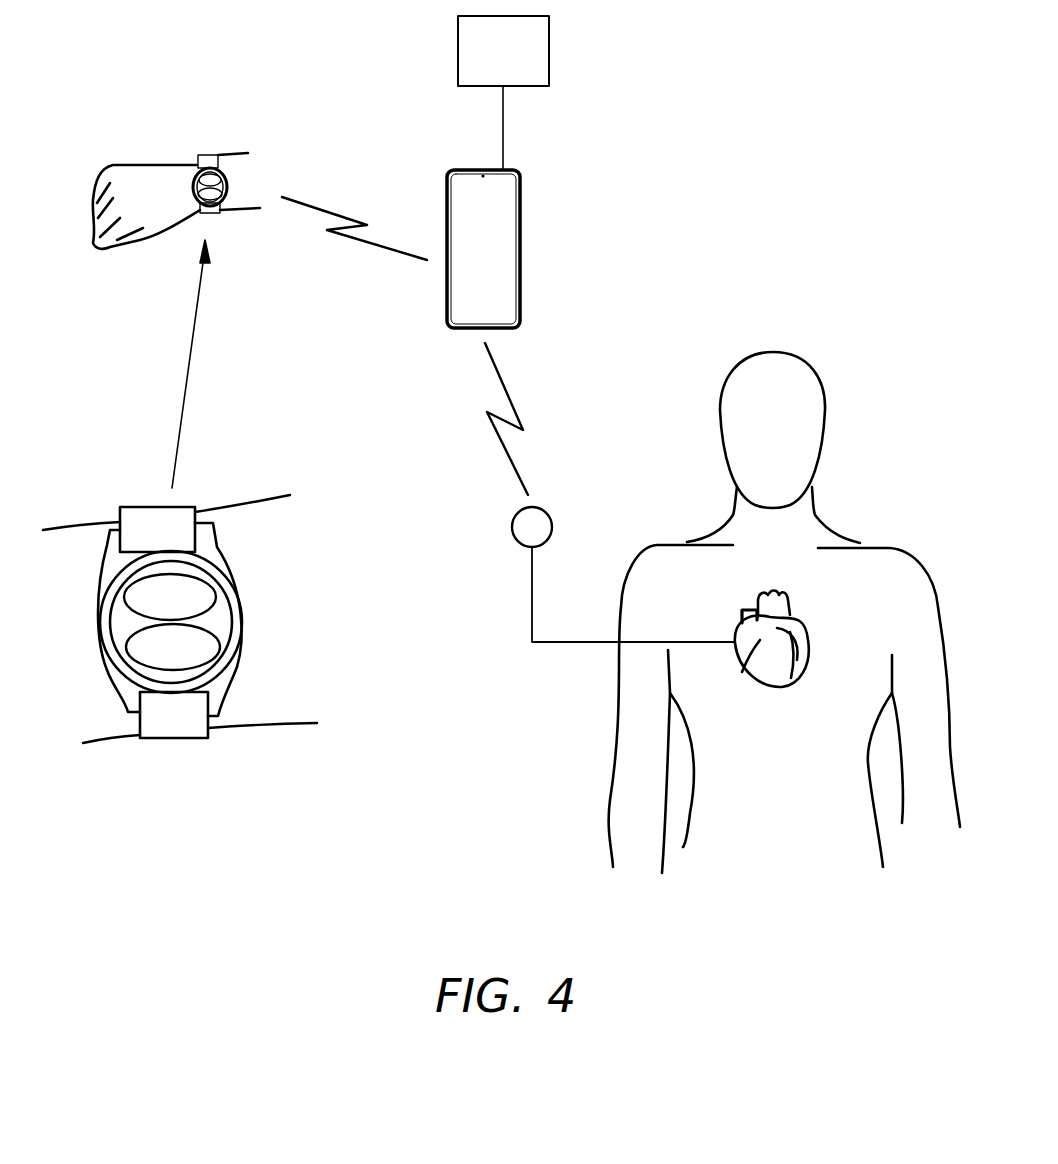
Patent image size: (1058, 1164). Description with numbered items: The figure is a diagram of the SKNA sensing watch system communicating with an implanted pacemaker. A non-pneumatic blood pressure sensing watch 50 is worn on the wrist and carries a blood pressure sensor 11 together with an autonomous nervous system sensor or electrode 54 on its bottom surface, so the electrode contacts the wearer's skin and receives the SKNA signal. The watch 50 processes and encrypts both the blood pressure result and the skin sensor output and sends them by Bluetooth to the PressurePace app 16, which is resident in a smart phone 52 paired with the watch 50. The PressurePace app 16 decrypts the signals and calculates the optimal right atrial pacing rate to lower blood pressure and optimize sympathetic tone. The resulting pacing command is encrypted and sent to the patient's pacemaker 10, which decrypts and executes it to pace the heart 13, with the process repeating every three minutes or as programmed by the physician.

The pacemaker 10 is at (550, 522).
The blood pressure sensor 11 is at (210, 583).
The heart 13 is at (752, 648).
The PressurePace algorithm or module (PP app) 16 is at (540, 70).
The blood pressure sensing watch 50 is at (210, 157).
The smart phone 52 is at (522, 247).
The autonomous nervous system (ANS) sensor or electrode 54 is at (207, 662).